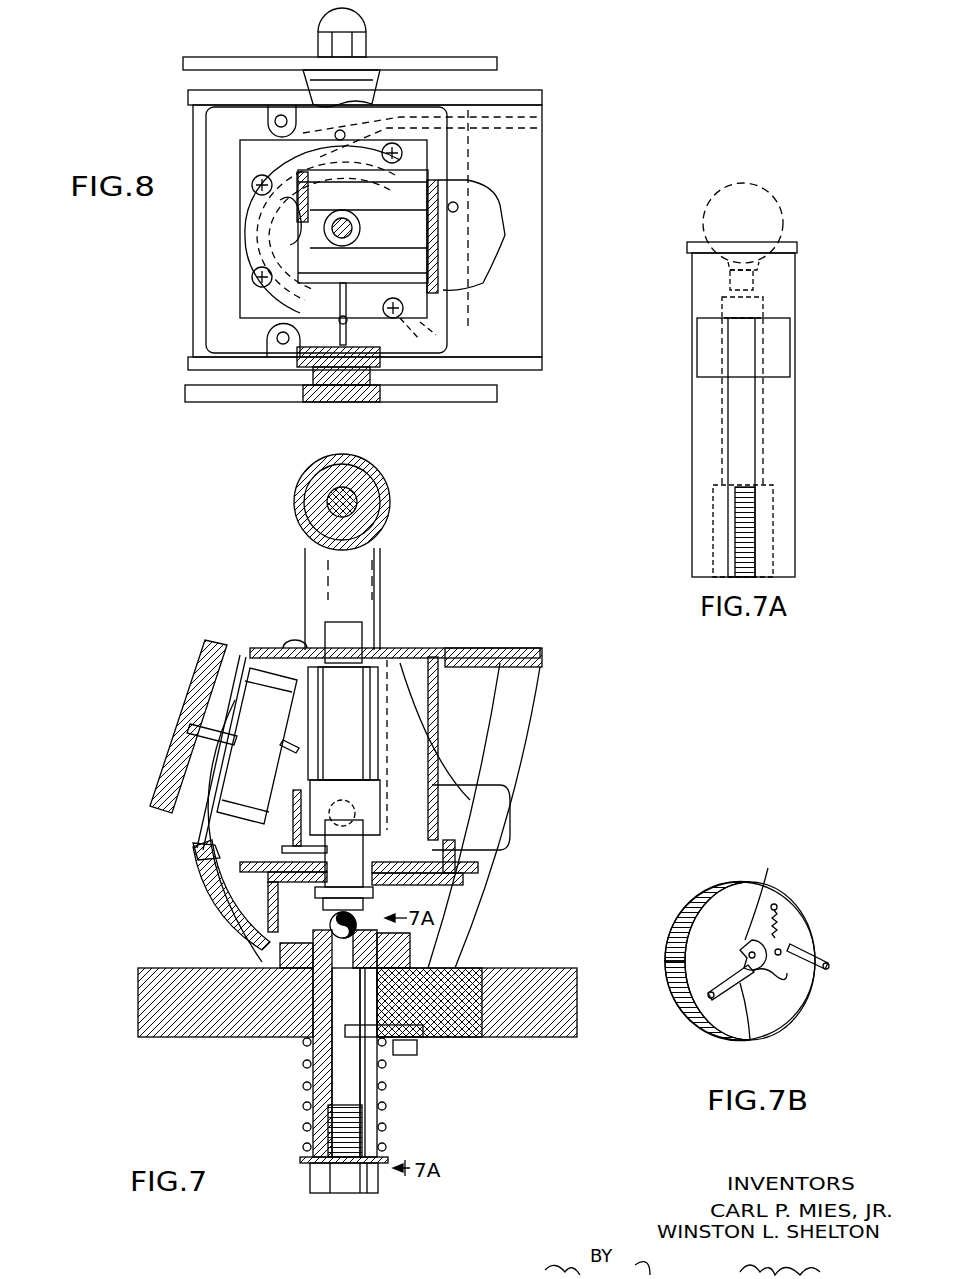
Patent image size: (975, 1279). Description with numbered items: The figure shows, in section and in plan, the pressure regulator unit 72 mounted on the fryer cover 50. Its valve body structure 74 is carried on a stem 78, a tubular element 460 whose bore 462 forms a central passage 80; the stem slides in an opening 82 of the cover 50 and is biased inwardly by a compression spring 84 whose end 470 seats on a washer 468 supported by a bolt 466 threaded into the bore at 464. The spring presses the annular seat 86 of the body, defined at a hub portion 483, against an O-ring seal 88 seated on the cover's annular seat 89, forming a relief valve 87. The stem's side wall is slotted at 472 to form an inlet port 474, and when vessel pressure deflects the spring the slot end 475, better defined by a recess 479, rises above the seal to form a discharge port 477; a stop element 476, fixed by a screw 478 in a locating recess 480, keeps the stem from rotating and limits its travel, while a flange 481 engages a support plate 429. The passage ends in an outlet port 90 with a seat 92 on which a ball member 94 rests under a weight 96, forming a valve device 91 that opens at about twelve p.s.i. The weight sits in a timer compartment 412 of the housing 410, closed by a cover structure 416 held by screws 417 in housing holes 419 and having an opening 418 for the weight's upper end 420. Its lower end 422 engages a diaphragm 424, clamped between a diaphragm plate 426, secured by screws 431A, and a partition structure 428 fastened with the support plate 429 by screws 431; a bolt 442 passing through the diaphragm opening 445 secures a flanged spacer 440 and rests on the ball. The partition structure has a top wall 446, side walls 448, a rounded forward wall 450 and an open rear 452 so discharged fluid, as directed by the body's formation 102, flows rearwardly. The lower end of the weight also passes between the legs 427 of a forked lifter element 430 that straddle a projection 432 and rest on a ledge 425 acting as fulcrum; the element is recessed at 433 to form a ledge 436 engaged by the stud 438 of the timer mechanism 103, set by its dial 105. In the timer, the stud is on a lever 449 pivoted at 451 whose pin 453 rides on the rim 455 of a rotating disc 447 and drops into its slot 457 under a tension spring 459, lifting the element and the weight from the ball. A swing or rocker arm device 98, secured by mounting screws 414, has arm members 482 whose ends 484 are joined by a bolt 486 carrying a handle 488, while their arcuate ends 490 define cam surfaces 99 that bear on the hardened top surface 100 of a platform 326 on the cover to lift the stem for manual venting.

In FIG. 7, the cover 50 is at (572, 967).
In FIG. 7, the pressure regulator unit 72 is at (568, 633).
In FIG. 7, the valve body structure 74 is at (535, 660).
In FIG. 7A, the stem 78 is at (724, 415).
In FIG. 7, the stem 78 is at (300, 1060).
In FIG. 7, the central passage 80 is at (330, 1090).
In FIG. 7, the opening 82 is at (280, 1040).
In FIG. 7, the compression spring 84 is at (328, 1130).
In FIG. 7, the annular seat 86 is at (480, 1043).
In FIG. 7, the relief valve 87 is at (148, 1040).
In FIG. 7, the O-ring seal 88 is at (470, 1037).
In FIG. 7, the annular seat 89 is at (215, 1040).
In FIG. 7, the outlet port 90 is at (300, 950).
In FIG. 7, the valve device 91 is at (260, 945).
In FIG. 7, the seat 92 is at (467, 920).
In FIG. 7A, the ball member 94 is at (773, 216).
In FIG. 7, the ball member 94 is at (380, 912).
In FIG. 7, the weight 96 is at (353, 712).
In FIG. 7, the swing or rocker arm device 98 is at (408, 510).
In FIG. 7, the cam surfaces 99 is at (440, 855).
In FIG. 7, the top surface 100 is at (503, 965).
In FIG. 7, the formation of valve body 102 is at (477, 863).
In FIG. 7B, the timer mechanism 103 is at (683, 928).
In FIG. 7, the timer mechanism 103 is at (240, 725).
In FIG. 7, the dial 105 is at (177, 725).
In FIG. 7, the platform 326 is at (140, 1040).
In FIG. 8, the housing 410 is at (485, 100).
In FIG. 7, the housing 410 is at (545, 655).
In FIG. 8, the timer compartment 412 is at (393, 115).
In FIG. 7, the timer compartment 412 is at (490, 650).
In FIG. 8, the mounting screws 414 is at (342, 403).
In FIG. 7, the cover structure 416 is at (410, 648).
In FIG. 7, the screws 417 is at (283, 645).
In FIG. 7, the opening 418 is at (370, 650).
In FIG. 8, the housing holes 419 is at (290, 110).
In FIG. 7, the upper end of weight 420 is at (340, 620).
In FIG. 7, the lower end of weight 422 is at (385, 840).
In FIG. 8, the diaphragm 424 is at (372, 222).
In FIG. 7, the diaphragm 424 is at (440, 833).
In FIG. 8, the ledge 425 is at (425, 330).
In FIG. 7, the ledge 425 is at (433, 853).
In FIG. 7, the diaphragm plate 426 is at (587, 843).
In FIG. 8, the legs 427 is at (415, 195).
In FIG. 7, the legs 427 is at (440, 800).
In FIG. 8, the partition structure 428 is at (525, 97).
In FIG. 7, the partition structure 428 is at (250, 880).
In FIG. 7, the support plate 429 is at (503, 1047).
In FIG. 7, the forked lifter element 430 is at (300, 850).
In FIG. 8, the screws 431 is at (345, 150).
In FIG. 7, the screws 431 is at (280, 870).
In FIG. 7, the screws 431A is at (510, 853).
In FIG. 8, the projection 432 is at (435, 225).
In FIG. 7, the projection 432 is at (440, 807).
In FIG. 8, the recess 433 is at (290, 213).
In FIG. 7, the recess 433 is at (300, 835).
In FIG. 7, the ledge 436 is at (297, 795).
In FIG. 8, the stud 438 is at (290, 203).
In FIG. 7B, the stud 438 is at (827, 948).
In FIG. 7, the stud 438 is at (290, 810).
In FIG. 7, the flanged spacer 440 is at (483, 877).
In FIG. 8, the bolt 442 is at (335, 240).
In FIG. 7, the bolt 442 is at (290, 895).
In FIG. 8, the opening 445 is at (363, 226).
In FIG. 7, the top wall 446 is at (210, 900).
In FIG. 7B, the disc 447 is at (768, 892).
In FIG. 7, the disc 447 is at (297, 742).
In FIG. 7, the side walls 448 is at (450, 937).
In FIG. 7B, the lever 449 is at (750, 1040).
In FIG. 7, the rounded forward wall 450 is at (280, 975).
In FIG. 7B, the pivot 451 is at (690, 1017).
In FIG. 7, the open rear 452 is at (457, 902).
In FIG. 7B, the pin 453 is at (775, 985).
In FIG. 7B, the rim 455 is at (740, 950).
In FIG. 7B, the slot 457 is at (787, 973).
In FIG. 7B, the tension spring 459 is at (777, 927).
In FIG. 7, the tubular element 460 is at (305, 1060).
In FIG. 7, the bore 462 is at (305, 1095).
In FIG. 7, the internal threads 464 is at (300, 1157).
In FIG. 7, the bolt 466 is at (343, 1193).
In FIG. 7, the washer 468 is at (388, 1163).
In FIG. 7, the spring end 470 is at (393, 1140).
In FIG. 7A, the slot 472 is at (738, 443).
In FIG. 7, the slot 472 is at (367, 1082).
In FIG. 7, the inlet port 474 is at (368, 1093).
In FIG. 7A, the slot end 475 is at (757, 343).
In FIG. 7, the slot end 475 is at (363, 1003).
In FIG. 7, the stop element 476 is at (383, 1073).
In FIG. 7A, the discharge port 477 is at (710, 333).
In FIG. 7, the discharge port 477 is at (313, 1033).
In FIG. 7, the screw 478 is at (457, 1057).
In FIG. 7A, the recess 479 is at (702, 360).
In FIG. 7, the locating recess 480 is at (423, 1037).
In FIG. 7A, the flange 481 is at (692, 250).
In FIG. 7, the flange 481 is at (440, 947).
In FIG. 7, the arm members 482 is at (375, 570).
In FIG. 7, the hub portion 483 is at (427, 1047).
In FIG. 7, the arm ends 484 is at (305, 557).
In FIG. 8, the bolt 486 is at (355, 72).
In FIG. 7, the bolt 486 is at (400, 485).
In FIG. 8, the handle 488 is at (322, 80).
In FIG. 7, the handle 488 is at (355, 470).
In FIG. 8, the arm ends 490 is at (228, 60).
In FIG. 7, the arm ends 490 is at (530, 1037).